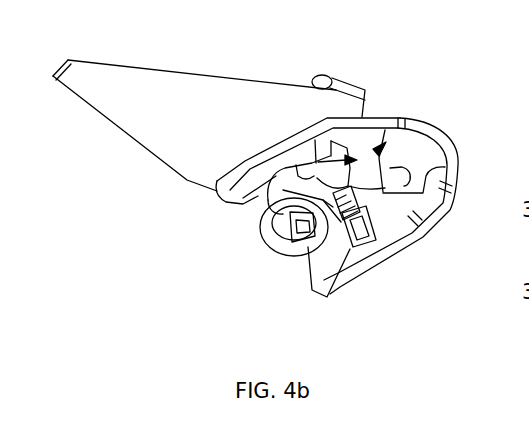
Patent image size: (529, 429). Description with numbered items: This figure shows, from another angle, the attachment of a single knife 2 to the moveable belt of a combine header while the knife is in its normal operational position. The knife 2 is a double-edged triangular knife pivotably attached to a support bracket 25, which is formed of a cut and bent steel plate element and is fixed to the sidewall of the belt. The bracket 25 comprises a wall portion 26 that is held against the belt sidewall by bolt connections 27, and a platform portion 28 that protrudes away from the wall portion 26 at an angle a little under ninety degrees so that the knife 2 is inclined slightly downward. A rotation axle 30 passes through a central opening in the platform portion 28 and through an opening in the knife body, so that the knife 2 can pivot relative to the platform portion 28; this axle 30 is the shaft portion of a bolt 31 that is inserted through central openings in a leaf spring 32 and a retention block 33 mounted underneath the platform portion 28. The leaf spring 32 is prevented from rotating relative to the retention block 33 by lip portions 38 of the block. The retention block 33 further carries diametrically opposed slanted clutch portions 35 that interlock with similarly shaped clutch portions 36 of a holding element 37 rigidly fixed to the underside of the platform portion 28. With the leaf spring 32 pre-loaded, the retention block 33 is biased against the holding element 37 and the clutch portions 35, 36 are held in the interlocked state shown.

The knife 2 is at (167, 88).
The support bracket 25 is at (454, 141).
The wall portion 26 is at (413, 209).
The bolt connections 27 is at (366, 205).
The platform portion 28 is at (405, 142).
The rotation axle 30 is at (318, 75).
The bolt 31 is at (290, 237).
The leaf spring 32 is at (324, 205).
The retention block 33 is at (255, 160).
The clutch portions 35 is at (290, 168).
The clutch portions 36 is at (383, 143).
The holding element 37 is at (338, 148).
The lip portions 38 is at (447, 170).